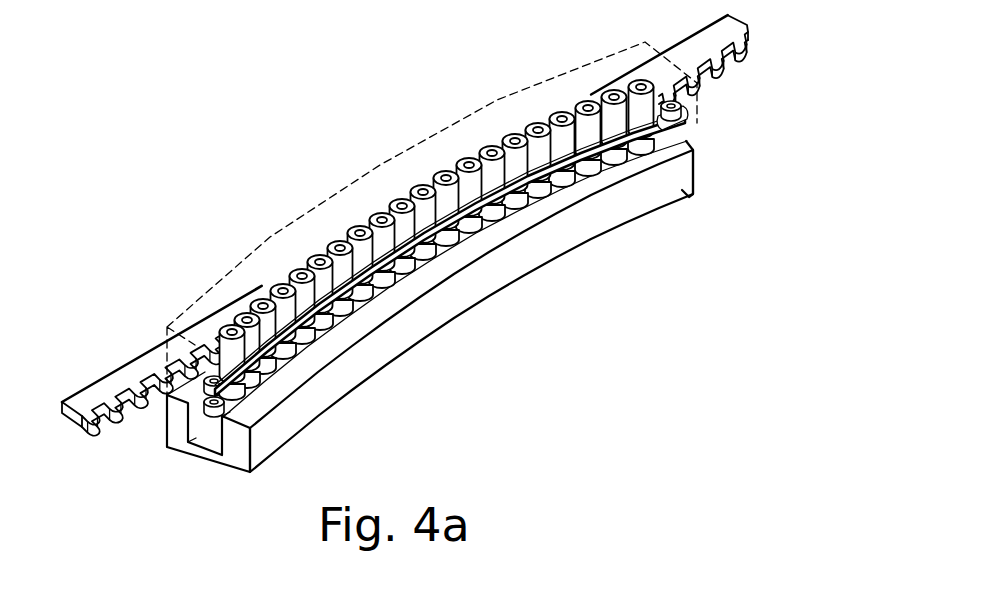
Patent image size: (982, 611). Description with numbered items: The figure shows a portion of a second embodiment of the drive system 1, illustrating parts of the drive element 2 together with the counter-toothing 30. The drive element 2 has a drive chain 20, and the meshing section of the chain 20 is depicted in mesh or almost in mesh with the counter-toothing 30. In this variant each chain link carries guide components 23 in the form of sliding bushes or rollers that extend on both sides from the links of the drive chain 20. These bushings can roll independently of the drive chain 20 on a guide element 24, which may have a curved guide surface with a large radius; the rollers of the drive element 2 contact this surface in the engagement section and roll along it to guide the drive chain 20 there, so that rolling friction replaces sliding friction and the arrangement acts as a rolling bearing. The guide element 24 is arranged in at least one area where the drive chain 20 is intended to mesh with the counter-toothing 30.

The drive system 1 is at (439, 243).
The drive element 2 is at (258, 194).
The drive chain 20 is at (493, 218).
The guide components 23 is at (693, 123).
The guide element 24 is at (403, 167).
The counter-toothing 30 is at (92, 400).